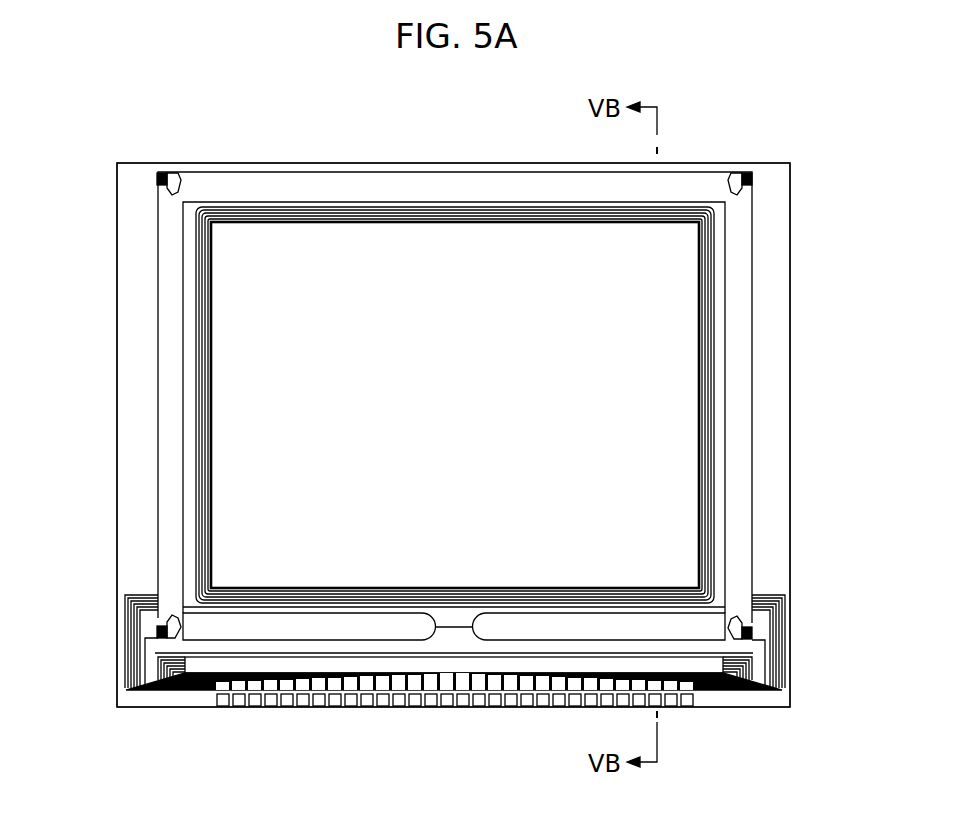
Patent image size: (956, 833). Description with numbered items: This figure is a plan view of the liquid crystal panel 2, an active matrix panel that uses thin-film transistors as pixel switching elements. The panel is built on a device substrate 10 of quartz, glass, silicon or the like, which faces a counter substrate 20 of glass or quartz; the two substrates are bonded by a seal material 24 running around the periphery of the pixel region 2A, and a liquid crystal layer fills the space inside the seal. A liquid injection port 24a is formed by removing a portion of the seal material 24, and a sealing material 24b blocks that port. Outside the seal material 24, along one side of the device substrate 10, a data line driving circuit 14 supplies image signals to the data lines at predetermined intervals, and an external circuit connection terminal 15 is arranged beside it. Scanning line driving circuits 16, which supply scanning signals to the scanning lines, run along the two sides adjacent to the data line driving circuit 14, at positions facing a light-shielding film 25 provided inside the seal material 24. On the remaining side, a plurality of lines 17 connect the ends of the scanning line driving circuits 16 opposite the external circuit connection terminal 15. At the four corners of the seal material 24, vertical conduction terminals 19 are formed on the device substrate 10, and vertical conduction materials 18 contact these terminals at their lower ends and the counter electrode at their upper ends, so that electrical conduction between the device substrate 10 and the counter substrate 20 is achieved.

The liquid crystal panel 2 is at (124, 150).
The pixel region 2A is at (340, 425).
The device substrate 10 is at (282, 170).
The data line driving circuit 14 is at (207, 662).
The external circuit connection terminal 15 is at (395, 696).
The scanning line driving circuit 16 is at (206, 368).
The lines 17 is at (482, 217).
The vertical conduction material 18 is at (164, 171).
The vertical conduction terminal 19 is at (162, 200).
The counter substrate 20 is at (363, 173).
The seal material 24 is at (735, 315).
The liquid injection port 24a is at (422, 622).
The sealing material 24b is at (505, 650).
The light-shielding film 25 is at (372, 600).